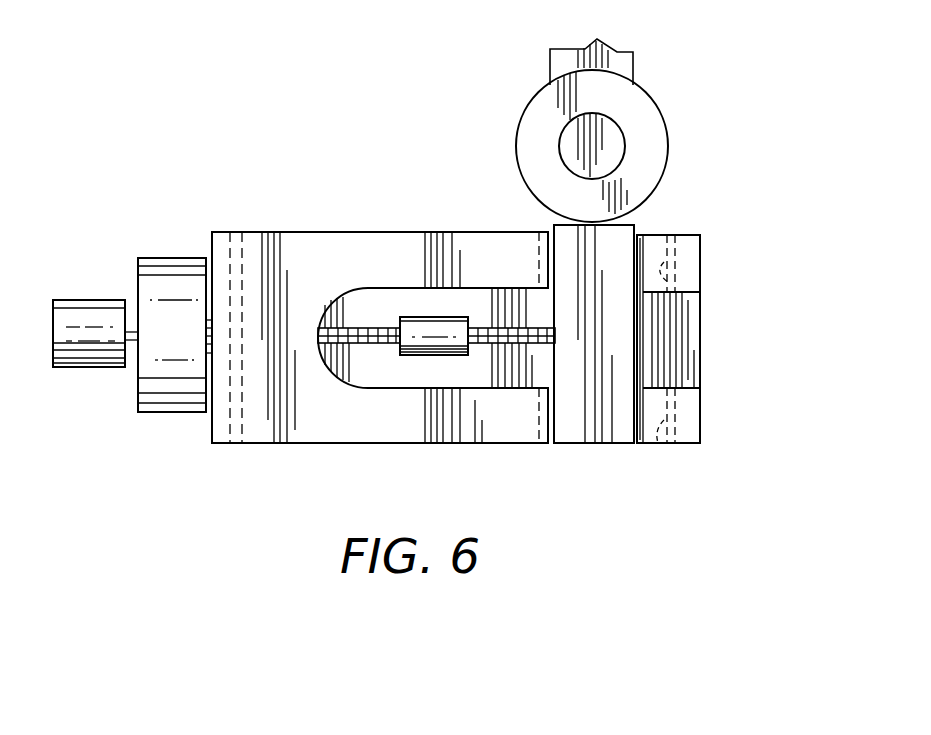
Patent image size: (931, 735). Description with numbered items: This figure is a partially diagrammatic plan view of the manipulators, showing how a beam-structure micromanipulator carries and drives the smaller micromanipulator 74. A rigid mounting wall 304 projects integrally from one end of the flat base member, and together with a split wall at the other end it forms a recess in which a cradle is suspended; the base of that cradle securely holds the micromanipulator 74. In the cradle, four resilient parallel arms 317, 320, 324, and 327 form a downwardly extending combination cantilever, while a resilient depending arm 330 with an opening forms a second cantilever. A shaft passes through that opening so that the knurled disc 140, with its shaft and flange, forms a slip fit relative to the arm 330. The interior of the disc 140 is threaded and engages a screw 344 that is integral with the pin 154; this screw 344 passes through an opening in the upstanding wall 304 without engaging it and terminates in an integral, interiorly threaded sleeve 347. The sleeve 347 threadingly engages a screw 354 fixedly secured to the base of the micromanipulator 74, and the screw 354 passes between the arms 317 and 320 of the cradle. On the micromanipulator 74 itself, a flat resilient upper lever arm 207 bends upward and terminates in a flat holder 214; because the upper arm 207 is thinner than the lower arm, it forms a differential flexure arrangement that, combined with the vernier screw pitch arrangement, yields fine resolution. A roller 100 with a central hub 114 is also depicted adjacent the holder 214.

The pin 154 is at (103, 300).
The knurled disc 140 is at (180, 258).
The resilient depending arm 330 is at (226, 255).
The rigid mounting wall 304 is at (346, 243).
The interiorly threaded sleeve 347 is at (422, 317).
The screw 354 is at (535, 330).
The screw 344 is at (373, 345).
The resilient parallel arm 320 is at (536, 245).
The resilient parallel arm 317 is at (536, 446).
The flat holder 214 is at (636, 224).
The roller 100 is at (657, 156).
The roller shaft 114 is at (612, 138).
The resilient parallel arm 324 is at (698, 272).
The flat resilient upper lever arm 207 is at (620, 314).
The micromanipulator 74 is at (623, 357).
The resilient parallel arm 327 is at (656, 443).